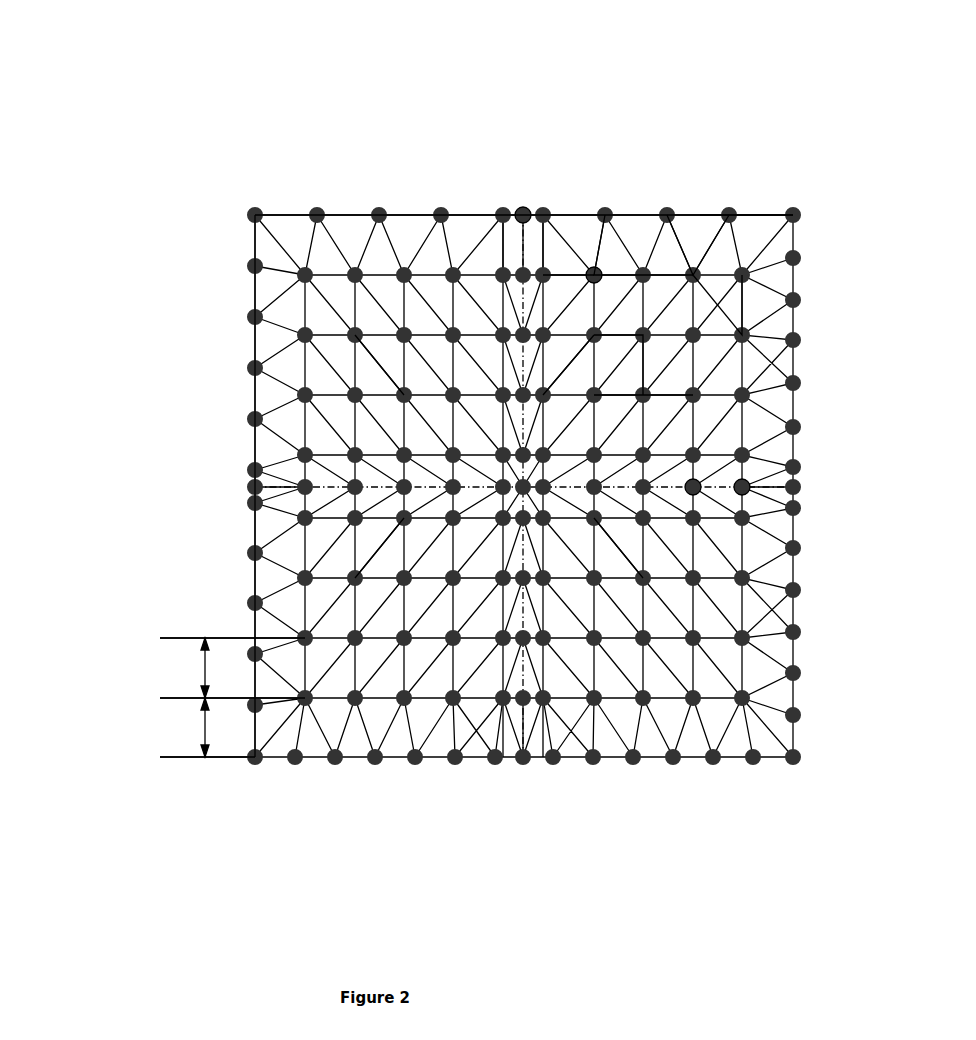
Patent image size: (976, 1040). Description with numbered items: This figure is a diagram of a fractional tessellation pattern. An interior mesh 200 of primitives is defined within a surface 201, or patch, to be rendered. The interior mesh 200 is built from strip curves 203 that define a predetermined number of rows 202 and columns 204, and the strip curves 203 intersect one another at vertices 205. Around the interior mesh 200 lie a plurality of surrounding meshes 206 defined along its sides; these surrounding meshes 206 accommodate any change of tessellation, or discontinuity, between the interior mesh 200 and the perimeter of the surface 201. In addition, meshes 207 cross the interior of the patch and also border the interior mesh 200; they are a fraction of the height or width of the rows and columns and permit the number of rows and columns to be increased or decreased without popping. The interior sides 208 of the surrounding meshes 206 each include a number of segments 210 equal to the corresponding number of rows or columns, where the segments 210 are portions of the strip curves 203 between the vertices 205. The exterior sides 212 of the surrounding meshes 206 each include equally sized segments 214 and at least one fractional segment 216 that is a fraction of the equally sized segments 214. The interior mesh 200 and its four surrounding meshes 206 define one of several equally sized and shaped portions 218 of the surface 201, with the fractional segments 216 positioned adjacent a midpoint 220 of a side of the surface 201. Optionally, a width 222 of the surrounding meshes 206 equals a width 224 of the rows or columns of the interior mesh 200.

The interior mesh 200 is at (690, 277).
The surface 201 is at (740, 197).
The rows 202 is at (698, 305).
The strip curves 203 is at (643, 362).
The columns 204 is at (618, 262).
The vertices 205 is at (640, 403).
The surrounding meshes 206 is at (698, 238).
The meshes crossing the interior of the patch 207 is at (686, 500).
The interior sides 208 is at (572, 273).
The segments 210 is at (750, 489).
The exterior sides 212 is at (590, 220).
The equally sized segments 214 is at (672, 277).
The fractional segment 216 is at (533, 217).
The portions 218 is at (600, 548).
The midpoint 220 is at (533, 220).
The width of the surrounding meshes 222 is at (186, 724).
The width of the rows or columns 224 is at (180, 671).